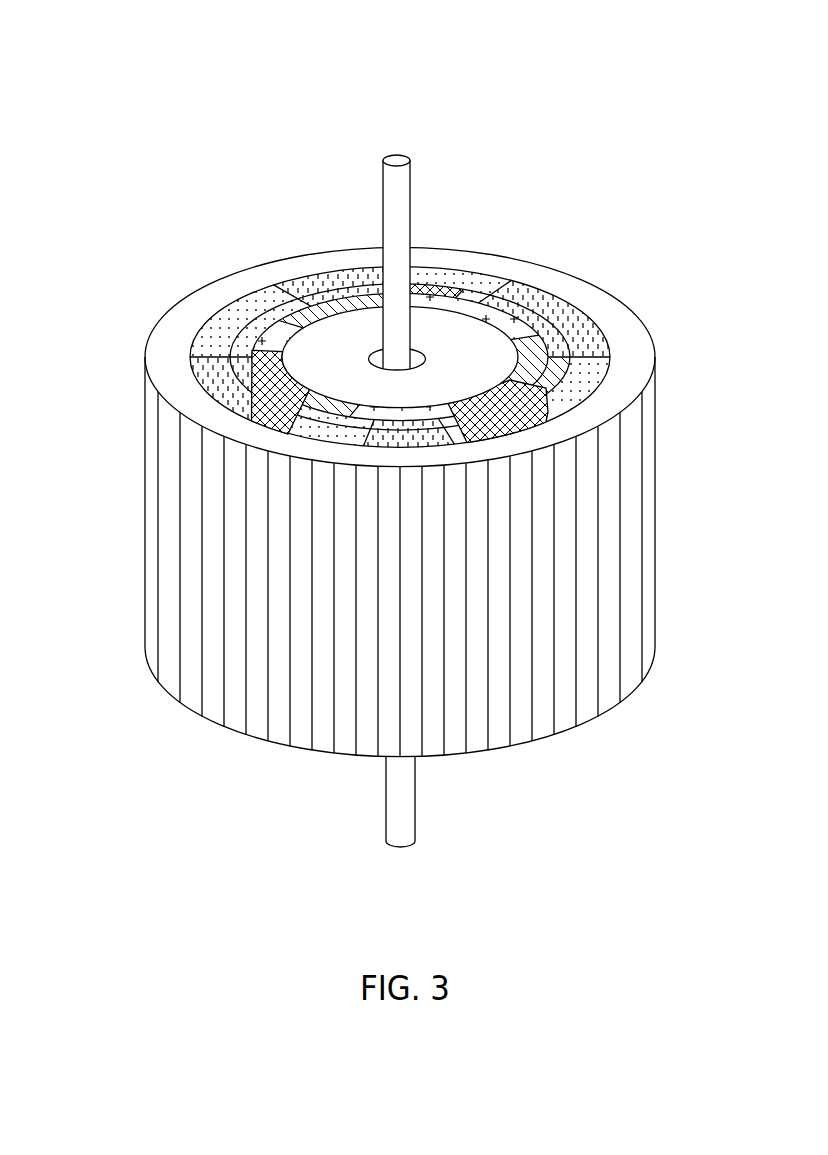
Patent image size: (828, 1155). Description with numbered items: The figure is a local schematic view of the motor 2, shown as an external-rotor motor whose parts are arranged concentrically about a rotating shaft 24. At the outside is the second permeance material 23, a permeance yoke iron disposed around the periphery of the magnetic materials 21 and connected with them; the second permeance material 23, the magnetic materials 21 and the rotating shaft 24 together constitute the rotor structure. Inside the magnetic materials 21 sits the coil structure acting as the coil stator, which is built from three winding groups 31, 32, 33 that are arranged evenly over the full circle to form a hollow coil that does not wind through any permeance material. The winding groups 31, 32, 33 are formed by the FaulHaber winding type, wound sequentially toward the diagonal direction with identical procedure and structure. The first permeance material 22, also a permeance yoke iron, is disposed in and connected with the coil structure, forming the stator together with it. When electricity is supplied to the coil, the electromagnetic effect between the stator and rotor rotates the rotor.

The motor 2 is at (105, 96).
The magnetic materials 21 is at (213, 330).
The first permeance material 22 is at (327, 330).
The second permeance material 23 is at (582, 300).
The rotating shaft 24 is at (399, 163).
The winding group 31 is at (360, 298).
The winding group 32 is at (277, 330).
The winding group 33 is at (437, 297).